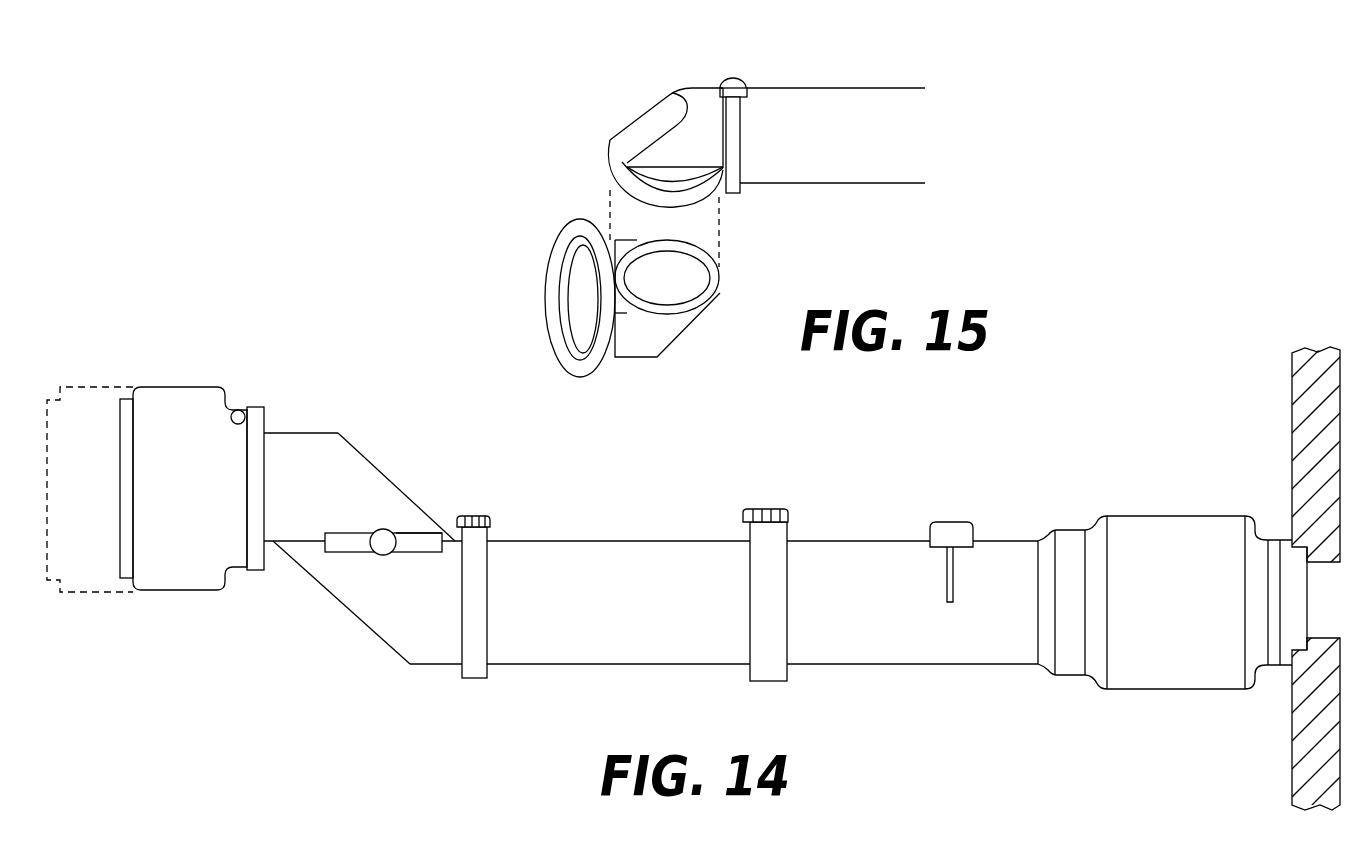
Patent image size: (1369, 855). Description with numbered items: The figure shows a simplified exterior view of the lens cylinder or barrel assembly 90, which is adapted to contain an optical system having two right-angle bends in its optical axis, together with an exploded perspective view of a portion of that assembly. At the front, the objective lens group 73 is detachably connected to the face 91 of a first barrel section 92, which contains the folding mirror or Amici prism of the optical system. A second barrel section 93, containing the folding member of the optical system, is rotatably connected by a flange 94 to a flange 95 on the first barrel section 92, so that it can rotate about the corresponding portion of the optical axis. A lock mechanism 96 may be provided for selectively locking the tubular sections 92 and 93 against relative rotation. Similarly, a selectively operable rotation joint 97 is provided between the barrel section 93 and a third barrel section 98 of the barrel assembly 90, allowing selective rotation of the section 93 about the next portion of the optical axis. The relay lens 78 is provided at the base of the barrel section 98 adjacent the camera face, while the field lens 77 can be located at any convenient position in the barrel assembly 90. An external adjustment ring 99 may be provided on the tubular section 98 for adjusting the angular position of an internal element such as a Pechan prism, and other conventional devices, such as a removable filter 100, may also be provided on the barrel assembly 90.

In FIG. 14, the objective lens group 73 is at (177, 387).
In FIG. 14, the field lens 77 is at (1290, 730).
In FIG. 14, the relay lens 78 is at (1142, 515).
In FIG. 14, the lens barrel assembly 90 is at (712, 475).
In FIG. 15, the lens barrel assembly 90 is at (852, 213).
In FIG. 14, the face 91 is at (242, 410).
In FIG. 15, the face 91 is at (553, 243).
In FIG. 14, the first barrel section 92 is at (328, 432).
In FIG. 15, the first barrel section 92 is at (697, 93).
In FIG. 14, the second barrel section 93 is at (377, 635).
In FIG. 14, the flange 94 is at (338, 553).
In FIG. 15, the flange 94 is at (715, 272).
In FIG. 14, the flange 95 is at (415, 537).
In FIG. 15, the flange 95 is at (608, 162).
In FIG. 14, the lock mechanism 96 is at (388, 478).
In FIG. 14, the rotation joint 97 is at (487, 563).
In FIG. 15, the rotation joint 97 is at (737, 78).
In FIG. 14, the third barrel section 98 is at (555, 666).
In FIG. 15, the third barrel section 98 is at (848, 88).
In FIG. 14, the external adjustment ring 99 is at (787, 562).
In FIG. 14, the removable filter 100 is at (958, 528).